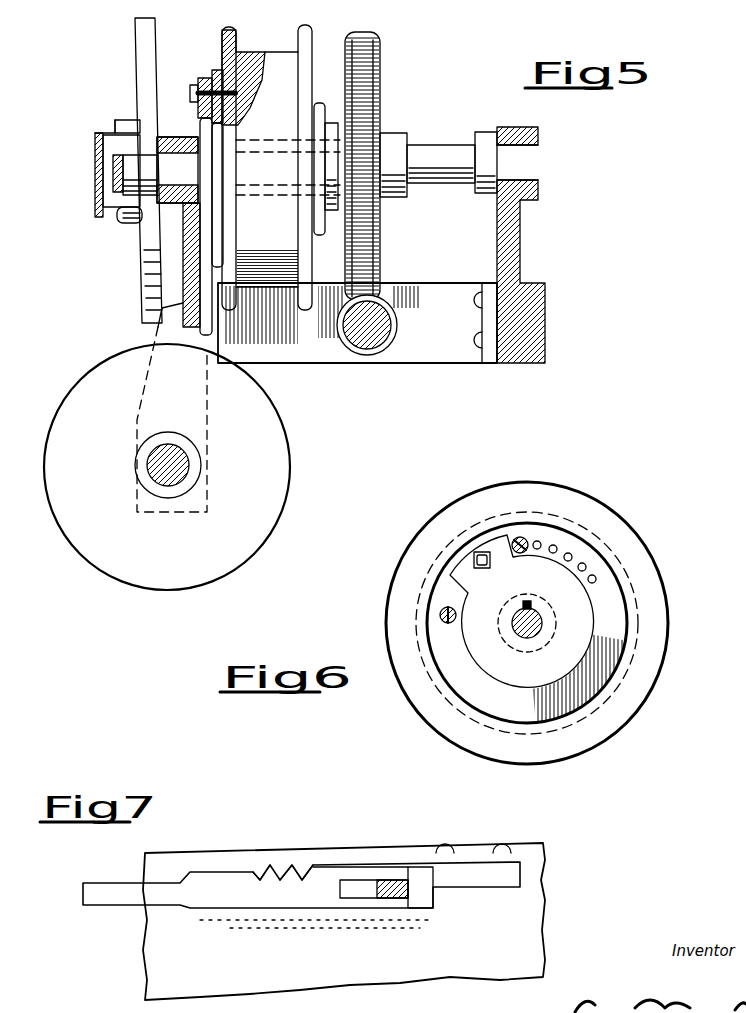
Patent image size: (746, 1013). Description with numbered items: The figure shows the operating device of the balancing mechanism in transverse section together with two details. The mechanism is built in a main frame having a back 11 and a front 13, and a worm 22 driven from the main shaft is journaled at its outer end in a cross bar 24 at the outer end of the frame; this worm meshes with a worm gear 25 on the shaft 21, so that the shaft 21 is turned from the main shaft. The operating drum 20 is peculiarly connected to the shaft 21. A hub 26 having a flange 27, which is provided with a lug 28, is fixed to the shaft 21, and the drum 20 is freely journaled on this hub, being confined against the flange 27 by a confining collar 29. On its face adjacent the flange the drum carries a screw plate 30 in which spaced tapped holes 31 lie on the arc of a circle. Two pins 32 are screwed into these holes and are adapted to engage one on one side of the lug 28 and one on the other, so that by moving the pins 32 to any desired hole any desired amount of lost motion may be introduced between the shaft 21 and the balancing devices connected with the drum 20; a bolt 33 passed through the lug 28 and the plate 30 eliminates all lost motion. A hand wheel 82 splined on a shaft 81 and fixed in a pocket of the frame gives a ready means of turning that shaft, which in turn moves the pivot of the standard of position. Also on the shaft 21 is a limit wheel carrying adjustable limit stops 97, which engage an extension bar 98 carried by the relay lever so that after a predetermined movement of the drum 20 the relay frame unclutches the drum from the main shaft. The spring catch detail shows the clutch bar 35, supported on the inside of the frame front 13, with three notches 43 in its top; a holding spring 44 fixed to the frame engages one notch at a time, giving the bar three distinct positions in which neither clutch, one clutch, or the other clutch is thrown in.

In FIG. 5, the back of the main frame 11 is at (532, 303).
In FIG. 7, the front of the main frame 13 is at (344, 921).
In FIG. 5, the operating drum 20 is at (330, 167).
In FIG. 6, the shaft 21 is at (535, 623).
In FIG. 5, the worm 22 is at (370, 335).
In FIG. 5, the cross bar 24 is at (357, 323).
In FIG. 5, the worm gear 25 is at (368, 86).
In FIG. 6, the hub 26 is at (535, 617).
In FIG. 5, the flange 27 is at (197, 232).
In FIG. 6, the flange 27 is at (522, 611).
In FIG. 6, the lug 28 is at (457, 575).
In FIG. 5, the confining collar 29 is at (330, 125).
In FIG. 5, the screw plate 30 is at (213, 73).
In FIG. 6, the screw plate 30 is at (607, 662).
In FIG. 6, the tapped holes 31 is at (572, 555).
In FIG. 6, the pins 32 is at (518, 538).
In FIG. 5, the bolt 33 is at (190, 88).
In FIG. 6, the bolt 33 is at (477, 553).
In FIG. 7, the clutch bar 35 is at (301, 876).
In FIG. 7, the notches 43 is at (262, 878).
In FIG. 7, the holding spring 44 is at (310, 870).
In FIG. 5, the shaft 81 is at (150, 465).
In FIG. 5, the hand wheel 82 is at (167, 304).
In FIG. 5, the limit stops 97 is at (118, 128).
In FIG. 5, the extension bar 98 is at (100, 168).